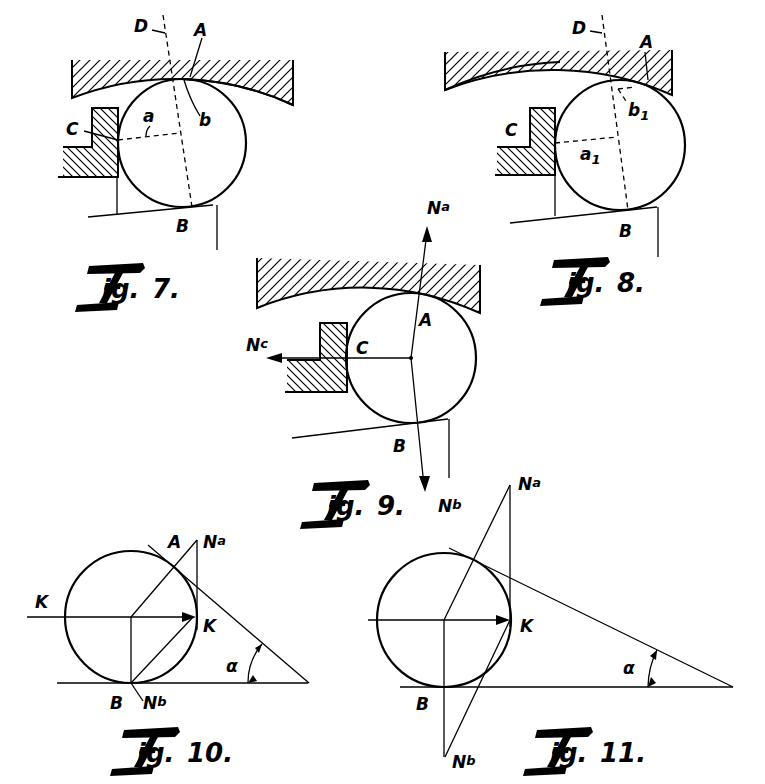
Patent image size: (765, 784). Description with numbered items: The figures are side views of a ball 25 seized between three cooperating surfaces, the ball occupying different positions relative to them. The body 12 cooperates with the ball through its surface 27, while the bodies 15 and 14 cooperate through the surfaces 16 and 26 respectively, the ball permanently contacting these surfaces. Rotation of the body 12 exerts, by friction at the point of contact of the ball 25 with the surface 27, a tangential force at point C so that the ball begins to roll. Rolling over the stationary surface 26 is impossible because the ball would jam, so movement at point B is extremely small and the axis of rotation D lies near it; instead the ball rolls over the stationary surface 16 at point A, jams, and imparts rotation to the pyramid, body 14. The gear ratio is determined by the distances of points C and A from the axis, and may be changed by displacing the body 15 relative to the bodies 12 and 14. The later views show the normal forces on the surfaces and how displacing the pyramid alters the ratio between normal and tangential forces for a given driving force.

In FIG. 7, the body 12 is at (85, 168).
In FIG. 8, the body 12 is at (508, 166).
In FIG. 7, the body (pyramid) 14 is at (207, 230).
In FIG. 8, the body (pyramid) 14 is at (650, 235).
In FIG. 7, the body 15 is at (290, 78).
In FIG. 8, the body 15 is at (453, 72).
In FIG. 7, the surface 16 is at (283, 104).
In FIG. 8, the surface 16 is at (473, 82).
In FIG. 7, the ball 25 is at (212, 95).
In FIG. 8, the ball 25 is at (582, 108).
In FIG. 7, the surface 26 is at (213, 205).
In FIG. 9, the surface 26 is at (449, 420).
In FIG. 7, the surface 27 is at (118, 174).